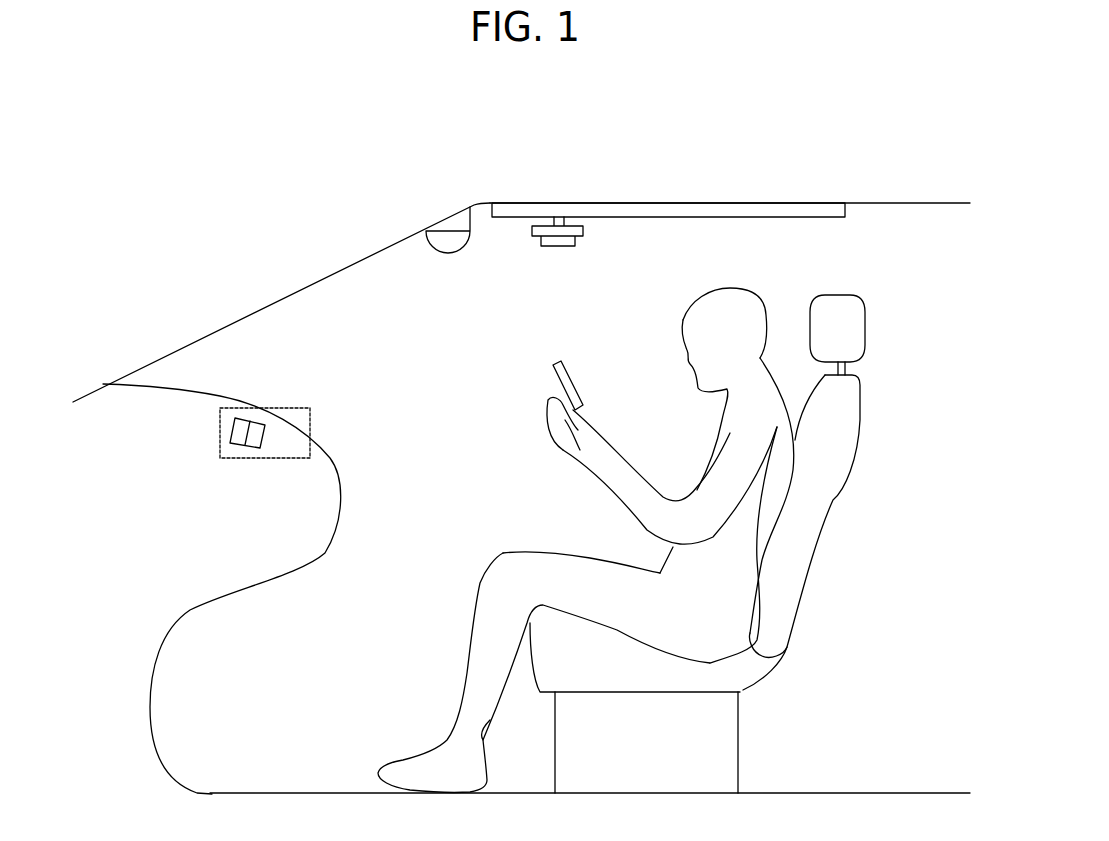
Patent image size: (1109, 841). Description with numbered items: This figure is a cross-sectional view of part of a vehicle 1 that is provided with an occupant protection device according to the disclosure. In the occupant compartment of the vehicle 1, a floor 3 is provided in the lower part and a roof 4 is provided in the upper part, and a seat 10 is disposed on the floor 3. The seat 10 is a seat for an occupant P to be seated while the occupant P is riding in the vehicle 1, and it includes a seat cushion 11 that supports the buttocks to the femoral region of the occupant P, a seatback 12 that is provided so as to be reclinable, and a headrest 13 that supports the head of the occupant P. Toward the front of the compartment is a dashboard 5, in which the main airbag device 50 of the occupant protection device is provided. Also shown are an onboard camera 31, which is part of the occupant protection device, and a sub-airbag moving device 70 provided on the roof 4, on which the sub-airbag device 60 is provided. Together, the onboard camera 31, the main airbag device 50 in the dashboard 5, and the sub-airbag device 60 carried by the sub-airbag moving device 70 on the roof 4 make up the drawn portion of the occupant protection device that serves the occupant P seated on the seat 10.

The vehicle 1 is at (846, 155).
The floor 3 is at (934, 792).
The roof 4 is at (934, 203).
The dashboard 5 is at (192, 403).
The seat 10 is at (742, 544).
The seat cushion 11 is at (690, 678).
The seatback 12 is at (790, 568).
The headrest 13 is at (856, 332).
The onboard camera 31 is at (445, 255).
The main airbag device 50 is at (277, 444).
The sub-airbag device 60 is at (560, 248).
The sub-airbag moving device 70 is at (630, 212).
The occupant P is at (732, 282).